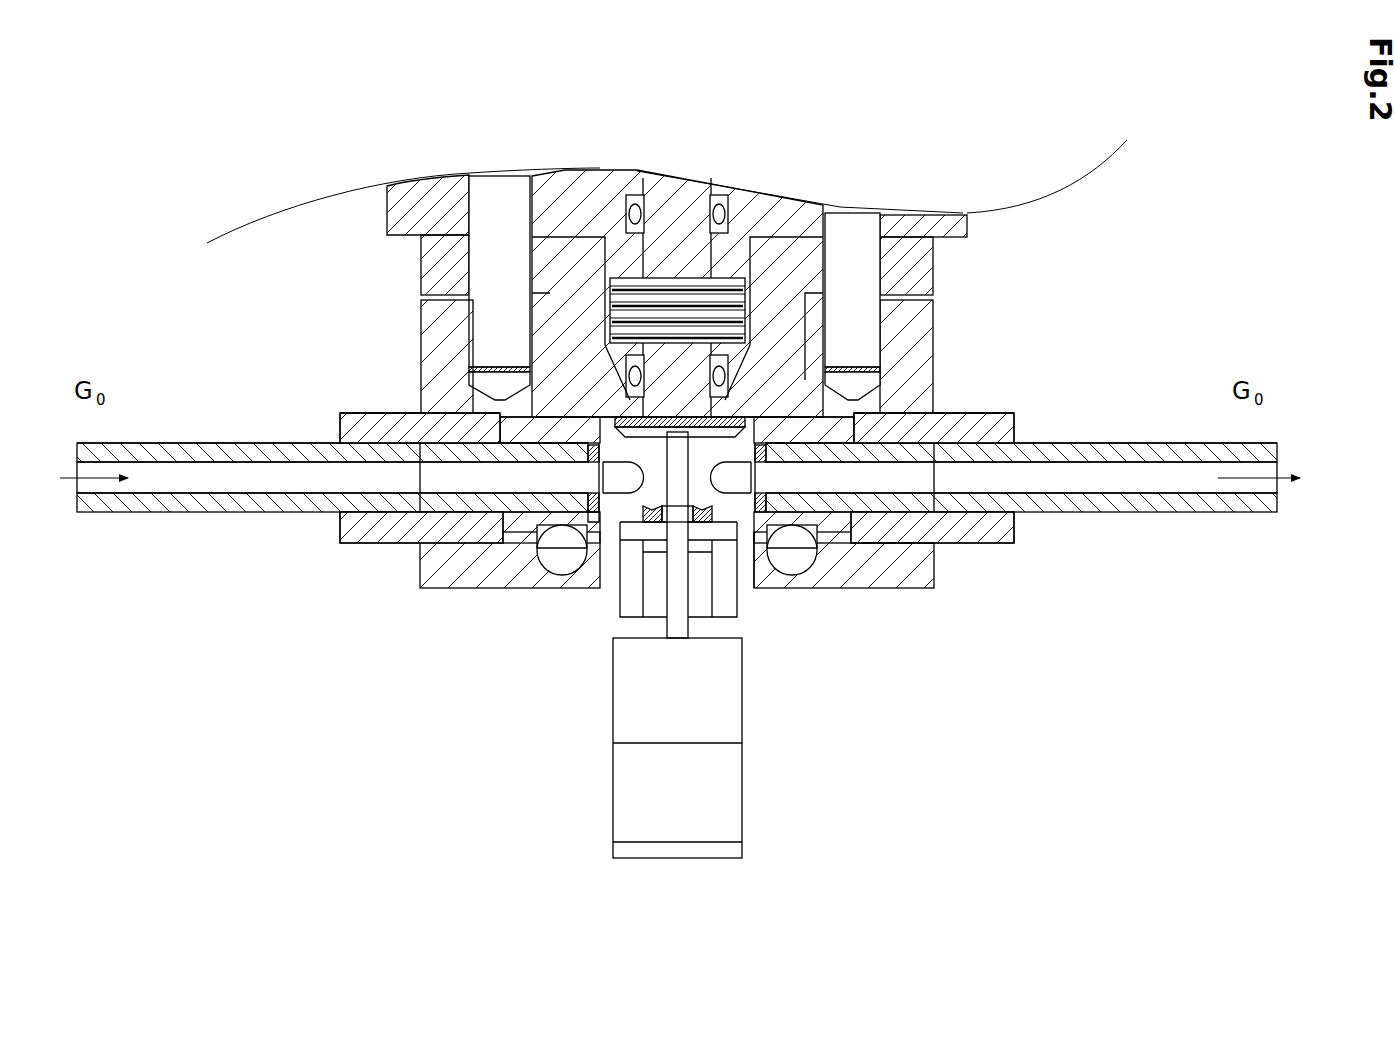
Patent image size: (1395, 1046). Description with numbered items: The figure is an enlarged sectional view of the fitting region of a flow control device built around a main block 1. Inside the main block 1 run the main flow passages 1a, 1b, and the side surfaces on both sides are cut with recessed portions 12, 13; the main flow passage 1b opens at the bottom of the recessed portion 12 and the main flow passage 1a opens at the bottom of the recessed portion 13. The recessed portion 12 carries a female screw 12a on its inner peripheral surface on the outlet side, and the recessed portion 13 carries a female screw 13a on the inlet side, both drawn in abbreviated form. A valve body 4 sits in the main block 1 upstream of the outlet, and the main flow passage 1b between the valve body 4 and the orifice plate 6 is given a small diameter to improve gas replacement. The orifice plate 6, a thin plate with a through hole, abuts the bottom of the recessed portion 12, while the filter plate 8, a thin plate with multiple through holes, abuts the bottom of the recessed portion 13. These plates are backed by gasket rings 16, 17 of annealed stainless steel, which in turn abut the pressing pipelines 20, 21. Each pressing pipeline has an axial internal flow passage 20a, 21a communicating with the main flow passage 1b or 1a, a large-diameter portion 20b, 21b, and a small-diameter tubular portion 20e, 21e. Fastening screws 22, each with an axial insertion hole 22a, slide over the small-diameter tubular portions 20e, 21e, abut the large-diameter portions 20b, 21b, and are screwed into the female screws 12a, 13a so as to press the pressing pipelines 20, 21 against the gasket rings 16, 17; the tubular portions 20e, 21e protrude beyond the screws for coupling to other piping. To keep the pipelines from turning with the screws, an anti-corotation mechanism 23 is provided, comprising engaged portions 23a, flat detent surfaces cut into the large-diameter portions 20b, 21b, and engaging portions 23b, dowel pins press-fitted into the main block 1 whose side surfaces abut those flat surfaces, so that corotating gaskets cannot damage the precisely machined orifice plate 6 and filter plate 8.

The main block 1 is at (942, 322).
The main flow passage 1a is at (630, 580).
The main flow passage 1b is at (735, 580).
The valve body 4 is at (678, 400).
The orifice plate 6 is at (790, 562).
The filter plate 8 is at (612, 470).
The recessed portion 12 is at (760, 432).
The female screw 12a is at (880, 545).
The recessed portion 13 is at (590, 443).
The female screw 13a is at (592, 510).
The gasket ring 16 is at (702, 522).
The gasket ring 17 is at (652, 522).
The pressing pipeline 20 is at (1095, 514).
The internal flow passage 20a is at (1175, 490).
The large-diameter portion 20b is at (915, 540).
The small-diameter tubular portion 20e is at (1110, 443).
The pressing pipeline 21 is at (268, 514).
The internal flow passage 21a is at (172, 493).
The large-diameter portion 21b is at (425, 540).
The small-diameter tubular portion 21e is at (230, 443).
The fastening screw 22 is at (330, 537).
The insertion hole 22a is at (345, 450).
The anti-corotation mechanism 23 is at (562, 700).
The engaged portion 23a is at (560, 565).
The engaging portion 23b is at (585, 565).